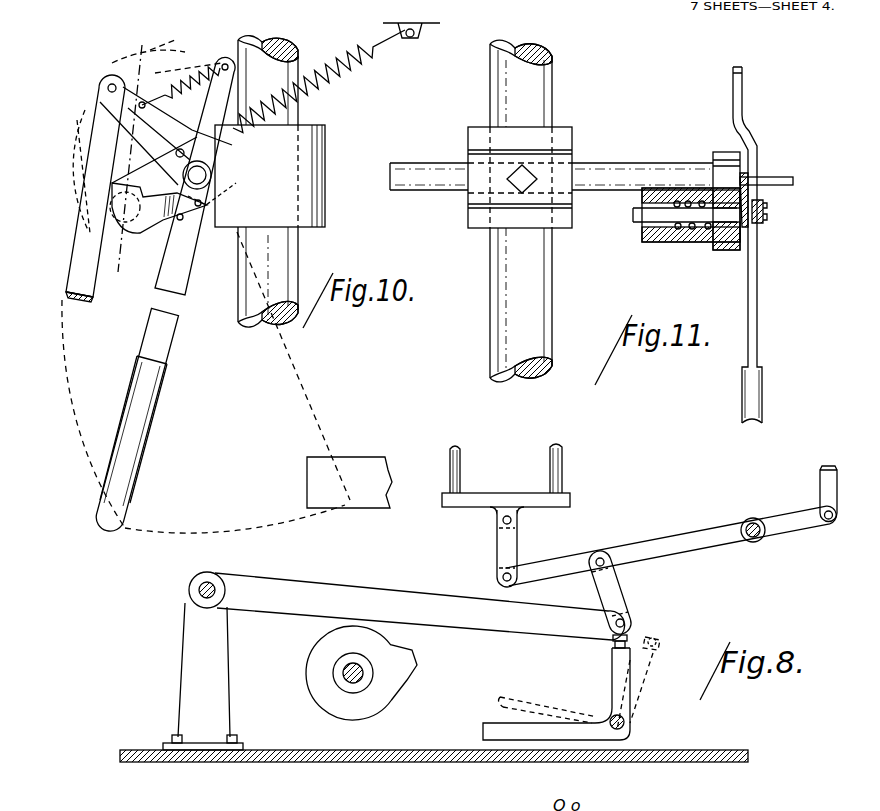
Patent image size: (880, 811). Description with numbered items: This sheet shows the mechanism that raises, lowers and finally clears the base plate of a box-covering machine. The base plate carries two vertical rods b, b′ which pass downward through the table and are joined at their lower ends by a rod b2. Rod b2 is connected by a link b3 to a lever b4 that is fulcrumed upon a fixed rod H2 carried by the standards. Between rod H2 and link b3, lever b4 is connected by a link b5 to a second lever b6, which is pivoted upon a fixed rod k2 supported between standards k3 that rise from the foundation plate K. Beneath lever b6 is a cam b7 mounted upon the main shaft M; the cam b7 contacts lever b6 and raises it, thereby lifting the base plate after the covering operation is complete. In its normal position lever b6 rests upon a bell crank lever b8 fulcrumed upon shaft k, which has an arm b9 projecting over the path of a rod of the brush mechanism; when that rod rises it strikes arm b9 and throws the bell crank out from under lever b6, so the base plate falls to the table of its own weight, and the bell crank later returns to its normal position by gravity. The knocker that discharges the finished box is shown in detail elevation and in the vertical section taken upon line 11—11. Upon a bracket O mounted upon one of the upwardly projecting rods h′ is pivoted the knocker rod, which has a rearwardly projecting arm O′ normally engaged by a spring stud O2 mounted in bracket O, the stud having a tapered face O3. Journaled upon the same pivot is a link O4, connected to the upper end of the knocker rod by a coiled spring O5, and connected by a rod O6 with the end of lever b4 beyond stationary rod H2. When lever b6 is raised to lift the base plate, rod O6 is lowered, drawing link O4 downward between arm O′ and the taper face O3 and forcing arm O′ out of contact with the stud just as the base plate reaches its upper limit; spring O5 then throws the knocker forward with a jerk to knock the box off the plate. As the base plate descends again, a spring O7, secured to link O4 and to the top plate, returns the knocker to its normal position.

In FIG. 10, the bracket O is at (326, 160).
In FIG. 11, the bracket O is at (566, 137).
In FIG. 10, the rearwardly projecting arm O′ is at (158, 230).
In FIG. 11, the rearwardly projecting arm O′ is at (760, 220).
In FIG. 11, the spring stud O2 is at (727, 250).
In FIG. 11, the tapered face O3 is at (730, 212).
In FIG. 10, the link O4 is at (128, 108).
In FIG. 11, the link O4 is at (740, 190).
In FIG. 10, the coiled spring O5 is at (186, 75).
In FIG. 10, the rod O6 is at (75, 298).
In FIG. 8, the rod O6 is at (826, 470).
In FIG. 10, the spring O7 is at (356, 68).
In FIG. 10, the upwardly projecting rod h′ is at (300, 250).
In FIG. 11, the upwardly projecting rod h′ is at (543, 268).
In FIG. 10, the section line 11 is at (132, 161).
In FIG. 8, the vertical rod b is at (459, 467).
In FIG. 8, the vertical rod b′ is at (563, 467).
In FIG. 8, the rod b2 is at (492, 497).
In FIG. 8, the link b3 is at (499, 542).
In FIG. 8, the lever b4 is at (640, 548).
In FIG. 8, the link b5 is at (620, 588).
In FIG. 8, the lever b6 is at (318, 593).
In FIG. 8, the cam b7 is at (318, 640).
In FIG. 8, the bell crank lever b8 is at (612, 672).
In FIG. 8, the arm b9 is at (497, 723).
In FIG. 8, the shaft k is at (626, 722).
In FIG. 8, the fixed rod k2 is at (192, 590).
In FIG. 8, the standard k3 is at (185, 632).
In FIG. 8, the foundation plate K is at (677, 765).
In FIG. 8, the fixed rod H2 is at (755, 518).
In FIG. 8, the main shaft M is at (347, 683).